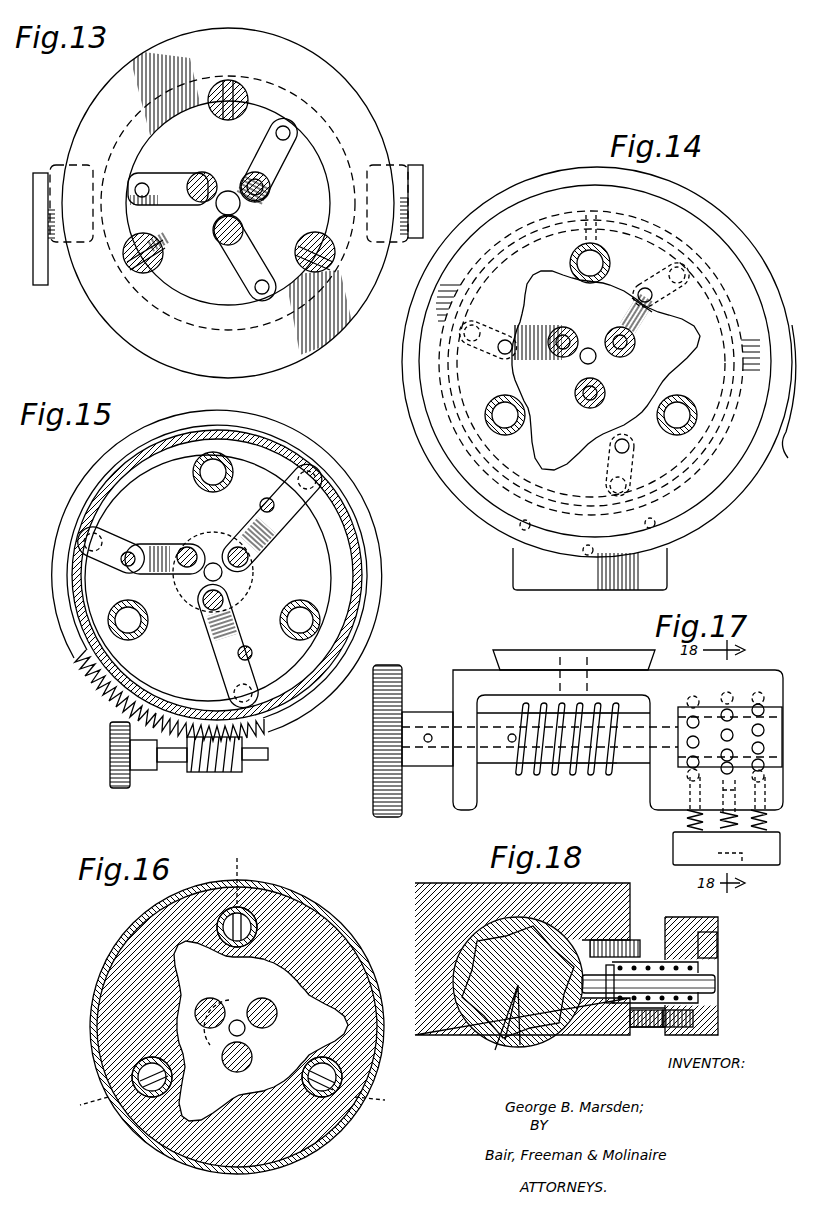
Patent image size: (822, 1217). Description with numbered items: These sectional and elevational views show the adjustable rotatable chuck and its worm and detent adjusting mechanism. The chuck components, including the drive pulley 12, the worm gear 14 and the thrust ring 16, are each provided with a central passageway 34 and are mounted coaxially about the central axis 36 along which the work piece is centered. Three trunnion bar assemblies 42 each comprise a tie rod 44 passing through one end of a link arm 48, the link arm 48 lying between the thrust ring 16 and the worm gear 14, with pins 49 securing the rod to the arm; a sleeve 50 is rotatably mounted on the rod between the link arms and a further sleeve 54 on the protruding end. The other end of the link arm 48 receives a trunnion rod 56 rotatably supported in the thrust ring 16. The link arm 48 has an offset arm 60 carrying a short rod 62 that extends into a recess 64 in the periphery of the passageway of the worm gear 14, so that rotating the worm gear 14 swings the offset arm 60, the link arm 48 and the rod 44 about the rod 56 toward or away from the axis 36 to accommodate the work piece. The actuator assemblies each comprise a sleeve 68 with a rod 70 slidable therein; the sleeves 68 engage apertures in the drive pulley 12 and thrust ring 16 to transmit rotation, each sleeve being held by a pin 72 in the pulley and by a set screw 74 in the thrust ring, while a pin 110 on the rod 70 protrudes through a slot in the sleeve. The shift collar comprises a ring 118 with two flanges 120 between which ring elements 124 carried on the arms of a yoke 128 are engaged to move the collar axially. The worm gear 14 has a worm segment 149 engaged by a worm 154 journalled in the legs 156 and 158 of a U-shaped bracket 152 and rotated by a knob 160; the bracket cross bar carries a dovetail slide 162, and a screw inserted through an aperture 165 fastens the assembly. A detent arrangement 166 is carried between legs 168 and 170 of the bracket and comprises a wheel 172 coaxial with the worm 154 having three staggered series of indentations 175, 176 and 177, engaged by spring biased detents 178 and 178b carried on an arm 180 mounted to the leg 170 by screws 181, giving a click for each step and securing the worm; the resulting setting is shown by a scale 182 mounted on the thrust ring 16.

In FIG. 16, the drive pulley 12 is at (130, 943).
In FIG. 15, the worm gear 14 is at (335, 480).
In FIG. 16, the worm gear 14 is at (140, 920).
In FIG. 14, the thrust ring 16 is at (715, 222).
In FIG. 13, the central passageway 34 is at (276, 229).
In FIG. 14, the central passageway 34 is at (568, 388).
In FIG. 15, the central passageway 34 is at (195, 623).
In FIG. 16, the central passageway 34 is at (284, 1060).
In FIG. 14, the central axis 36 is at (586, 345).
In FIG. 13, the trunnion bar assembly 42 is at (246, 174).
In FIG. 13, the tie bar or rod 44 is at (210, 174).
In FIG. 14, the tie bar or rod 44 is at (633, 348).
In FIG. 15, the tie bar or rod 44 is at (188, 547).
In FIG. 16, the tie bar or rod 44 is at (212, 1028).
In FIG. 13, the link arm 48 is at (183, 158).
In FIG. 14, the link arm 48 is at (540, 318).
In FIG. 15, the link arm 48 is at (237, 530).
In FIG. 15, the pin 49 is at (268, 535).
In FIG. 13, the sleeve 50 is at (213, 225).
In FIG. 14, the sleeve 50 is at (562, 330).
In FIG. 15, the sleeve 54 is at (270, 548).
In FIG. 16, the sleeve 54 is at (225, 997).
In FIG. 13, the trunnion rod 56 is at (148, 185).
In FIG. 14, the trunnion rod 56 is at (506, 340).
In FIG. 15, the trunnion rod 56 is at (133, 552).
In FIG. 14, the offset arm 60 is at (648, 270).
In FIG. 15, the offset arm 60 is at (278, 483).
In FIG. 14, the short rod 62 is at (476, 325).
In FIG. 15, the short rod 62 is at (102, 537).
In FIG. 15, the recess or slot 64 is at (310, 452).
In FIG. 13, the sleeve 68 is at (242, 90).
In FIG. 14, the sleeve 68 is at (569, 260).
In FIG. 15, the sleeve 68 is at (193, 480).
In FIG. 16, the sleeve 68 is at (248, 912).
In FIG. 13, the rod 70 is at (245, 97).
In FIG. 16, the pin 72 is at (234, 983).
In FIG. 14, the set screw 74 is at (596, 216).
In FIG. 13, the pin 110 is at (152, 246).
In FIG. 13, the ring 118 is at (330, 162).
In FIG. 13, the flange 120 is at (322, 62).
In FIG. 13, the ring element 124 is at (50, 165).
In FIG. 13, the yoke 128 is at (40, 285).
In FIG. 15, the worm segment 149 is at (112, 703).
In FIG. 17, the U-shaped bracket 152 is at (478, 678).
In FIG. 15, the worm 154 is at (222, 772).
In FIG. 17, the worm 154 is at (560, 775).
In FIG. 17, the leg 156 is at (462, 808).
In FIG. 17, the leg 158 is at (650, 790).
In FIG. 15, the knob 160 is at (109, 762).
In FIG. 17, the knob 160 is at (372, 795).
In FIG. 14, the dovetail slide 162 is at (668, 568).
In FIG. 17, the dovetail slide 162 is at (640, 636).
In FIG. 17, the aperture 165 is at (578, 655).
In FIG. 17, the detent arrangement 166 is at (655, 810).
In FIG. 18, the detent arrangement 166 is at (600, 1040).
In FIG. 17, the leg 168 is at (770, 672).
In FIG. 18, the leg 168 is at (415, 898).
In FIG. 17, the leg 170 is at (775, 806).
In FIG. 18, the leg 170 is at (630, 898).
In FIG. 17, the wheel 172 is at (770, 712).
In FIG. 18, the wheel 172 is at (478, 1030).
In FIG. 17, the indentations 175 is at (690, 716).
In FIG. 17, the indentations 176 is at (722, 710).
In FIG. 18, the indentations 176 is at (545, 1040).
In FIG. 17, the indentations 177 is at (755, 705).
In FIG. 17, the spring biased detent 178 is at (688, 818).
In FIG. 18, the spring biased detent 178 is at (648, 965).
In FIG. 17, the spring biased detent 178b is at (770, 808).
In FIG. 18, the spring biased detent 178b is at (716, 984).
In FIG. 17, the arm 180 is at (672, 850).
In FIG. 18, the arm 180 is at (668, 1035).
In FIG. 17, the screw 181 is at (743, 867).
In FIG. 18, the screw 181 is at (718, 940).
In FIG. 14, the scale 182 is at (786, 432).